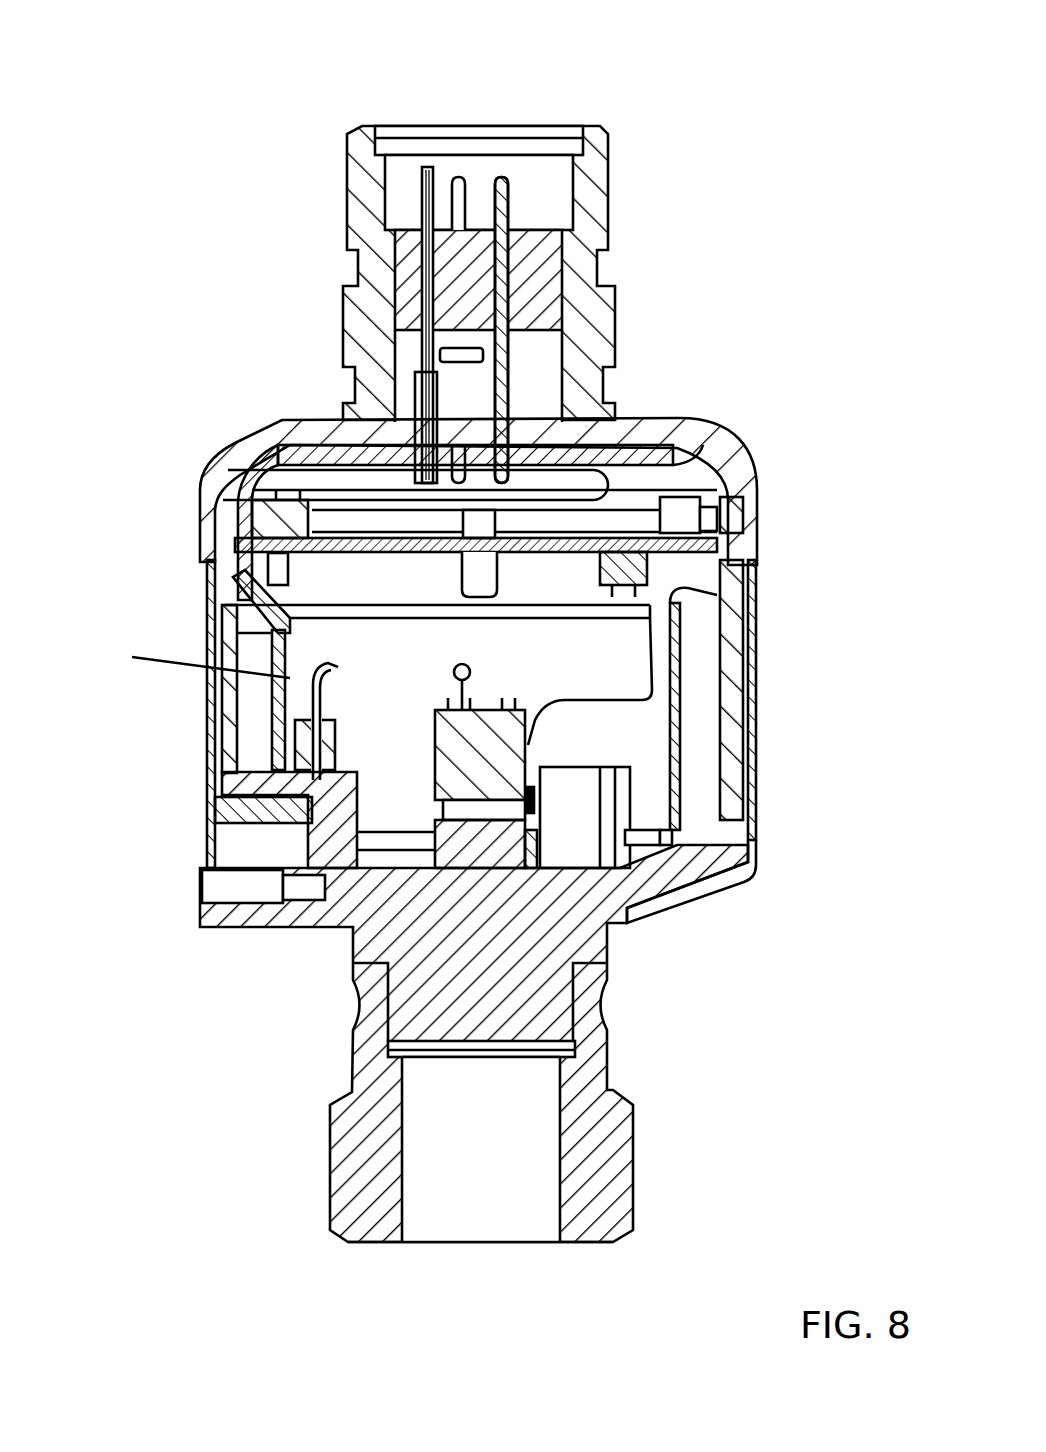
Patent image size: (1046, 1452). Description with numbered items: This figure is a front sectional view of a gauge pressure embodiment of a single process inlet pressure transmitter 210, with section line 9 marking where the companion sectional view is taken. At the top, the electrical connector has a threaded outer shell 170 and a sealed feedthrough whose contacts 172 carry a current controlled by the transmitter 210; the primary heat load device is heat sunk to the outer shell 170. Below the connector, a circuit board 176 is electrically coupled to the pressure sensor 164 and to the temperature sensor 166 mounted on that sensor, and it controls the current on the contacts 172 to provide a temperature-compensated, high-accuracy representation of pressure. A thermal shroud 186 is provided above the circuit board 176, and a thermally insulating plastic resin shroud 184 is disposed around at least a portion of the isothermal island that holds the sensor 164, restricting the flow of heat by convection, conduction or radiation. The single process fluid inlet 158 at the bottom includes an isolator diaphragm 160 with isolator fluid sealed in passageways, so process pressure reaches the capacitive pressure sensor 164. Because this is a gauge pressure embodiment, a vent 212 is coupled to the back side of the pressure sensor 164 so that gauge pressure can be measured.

The single process inlet pressure transmitter 210 is at (805, 76).
The threaded outer shell 170 is at (347, 182).
The contacts 172 is at (458, 196).
The fluid inlet 158 is at (693, 443).
The thermal shroud 186 is at (738, 470).
The circuit board 176 is at (735, 522).
The thermally insulating plastic resin shroud 184 is at (687, 674).
The capacitive differential pressure sensor 164 is at (433, 762).
The temperature sensor 166 is at (530, 802).
The vent 212 is at (245, 810).
The isolator diaphragm 160 is at (480, 1050).
The section line 9- 9 is at (463, 1290).